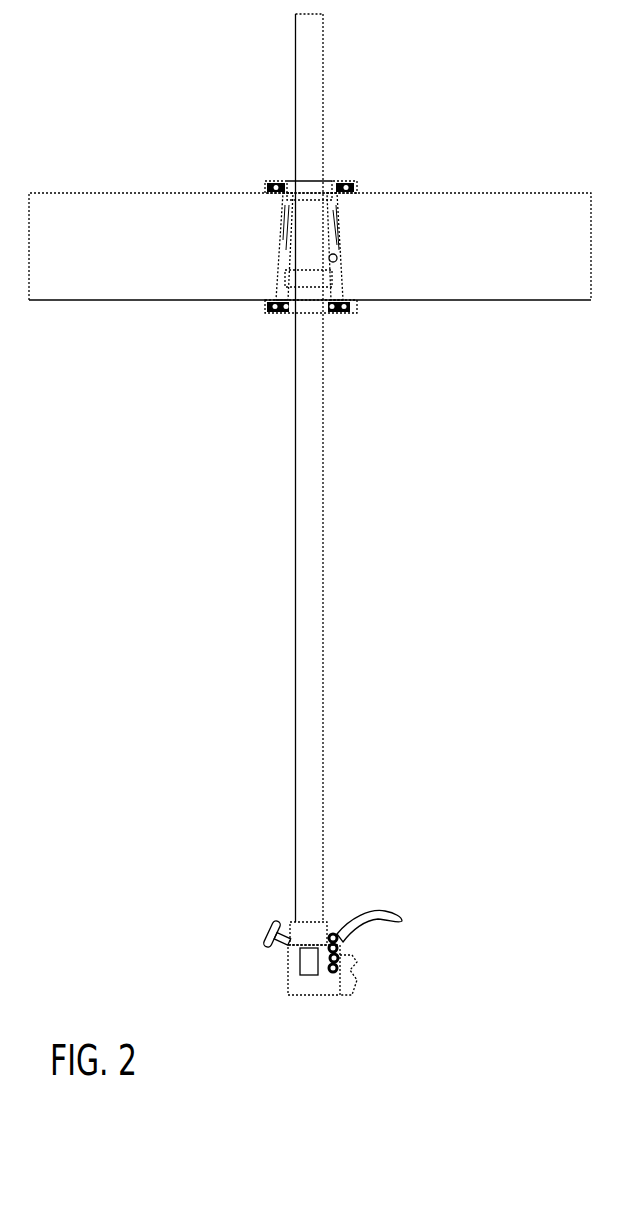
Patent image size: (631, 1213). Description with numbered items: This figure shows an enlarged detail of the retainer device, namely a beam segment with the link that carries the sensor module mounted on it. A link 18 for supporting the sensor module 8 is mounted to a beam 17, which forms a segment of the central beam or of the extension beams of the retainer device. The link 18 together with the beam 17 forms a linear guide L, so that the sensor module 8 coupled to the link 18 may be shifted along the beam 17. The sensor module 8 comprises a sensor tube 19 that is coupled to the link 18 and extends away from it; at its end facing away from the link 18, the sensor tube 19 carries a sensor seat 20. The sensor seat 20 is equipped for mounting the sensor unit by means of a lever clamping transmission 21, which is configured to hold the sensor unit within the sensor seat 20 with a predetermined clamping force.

The sensor module 8 is at (383, 408).
The beam 17 is at (552, 200).
The link 18 is at (348, 166).
The sensor tube 19 is at (295, 522).
The sensor seat 20 is at (352, 896).
The lever clamping transmission 21 is at (352, 940).
The linear guide L is at (250, 174).